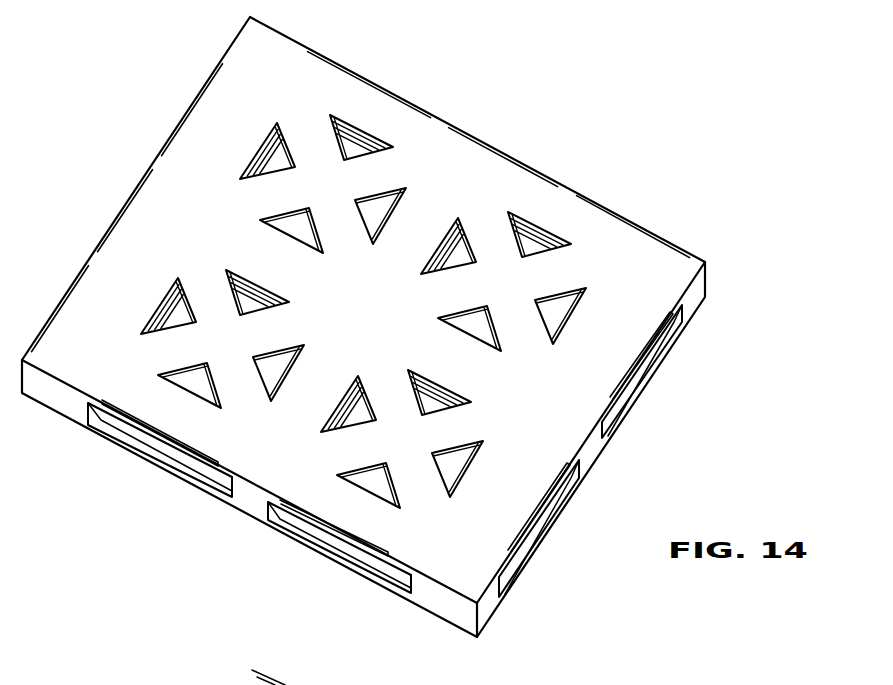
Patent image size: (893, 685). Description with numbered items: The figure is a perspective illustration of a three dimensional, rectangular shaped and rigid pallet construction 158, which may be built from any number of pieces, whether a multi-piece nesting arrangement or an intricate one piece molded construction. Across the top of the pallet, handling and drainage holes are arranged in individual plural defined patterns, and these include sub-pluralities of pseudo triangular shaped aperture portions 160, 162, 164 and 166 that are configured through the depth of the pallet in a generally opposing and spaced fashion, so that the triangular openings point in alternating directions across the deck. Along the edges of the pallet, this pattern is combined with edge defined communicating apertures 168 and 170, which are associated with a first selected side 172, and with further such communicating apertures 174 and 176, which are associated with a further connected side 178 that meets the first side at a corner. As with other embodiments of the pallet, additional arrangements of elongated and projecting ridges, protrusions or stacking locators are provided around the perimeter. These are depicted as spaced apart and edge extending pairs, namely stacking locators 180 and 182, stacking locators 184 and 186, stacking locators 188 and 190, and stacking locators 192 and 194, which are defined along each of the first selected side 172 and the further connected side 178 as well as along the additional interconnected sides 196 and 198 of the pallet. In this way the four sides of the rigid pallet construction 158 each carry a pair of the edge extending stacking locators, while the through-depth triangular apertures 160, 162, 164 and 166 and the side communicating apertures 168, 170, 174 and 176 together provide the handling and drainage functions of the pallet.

The rigid pallet construction 158 is at (138, 110).
The pseudo triangular shaped aperture portion 160 is at (385, 135).
The pseudo triangular shaped aperture portion 162 is at (516, 210).
The pseudo triangular shaped aperture portion 164 is at (180, 276).
The pseudo triangular shaped aperture portion 166 is at (358, 374).
The edge defined communicating aperture 168 is at (172, 460).
The edge defined communicating aperture 170 is at (345, 552).
The first selected side 172 is at (248, 512).
The edge defined communicating aperture 174 is at (515, 565).
The edge defined communicating aperture 176 is at (620, 407).
The further connected side 178 is at (590, 452).
The stacking locator 180 is at (118, 410).
The stacking locator 182 is at (382, 553).
The stacking locator 184 is at (530, 527).
The stacking locator 186 is at (637, 367).
The stacking locator 188 is at (598, 205).
The stacking locator 190 is at (346, 68).
The stacking locator 192 is at (209, 78).
The stacking locator 194 is at (93, 253).
The interconnected side 196 is at (473, 137).
The interconnected side 198 is at (132, 193).